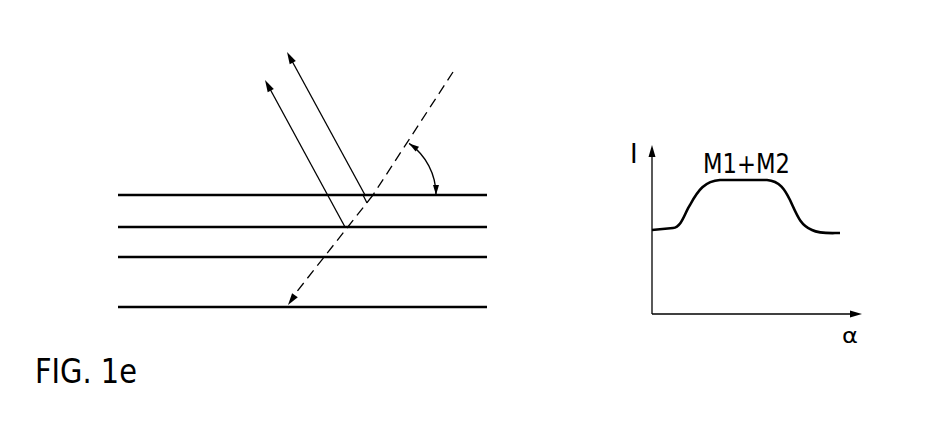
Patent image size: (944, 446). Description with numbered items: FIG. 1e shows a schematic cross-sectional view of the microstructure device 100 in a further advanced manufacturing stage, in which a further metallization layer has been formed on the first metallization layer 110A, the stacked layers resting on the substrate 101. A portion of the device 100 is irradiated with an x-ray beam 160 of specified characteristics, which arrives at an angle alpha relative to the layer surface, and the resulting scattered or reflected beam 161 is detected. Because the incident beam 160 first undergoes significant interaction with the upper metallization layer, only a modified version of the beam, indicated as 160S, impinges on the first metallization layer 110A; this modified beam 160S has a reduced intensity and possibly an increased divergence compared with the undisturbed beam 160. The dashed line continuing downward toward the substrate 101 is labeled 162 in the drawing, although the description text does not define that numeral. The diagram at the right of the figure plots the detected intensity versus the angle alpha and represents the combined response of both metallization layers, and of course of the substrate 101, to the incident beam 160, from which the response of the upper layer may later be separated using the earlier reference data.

The microstructure device 100 is at (110, 129).
The substrate 101 is at (477, 290).
The first metallization layer 110A is at (499, 247).
The x-ray beam 160 is at (421, 120).
The modified beam 160S is at (363, 205).
The scattered or reflected beam 161 is at (305, 83).
The transmitted beam 162 is at (309, 283).